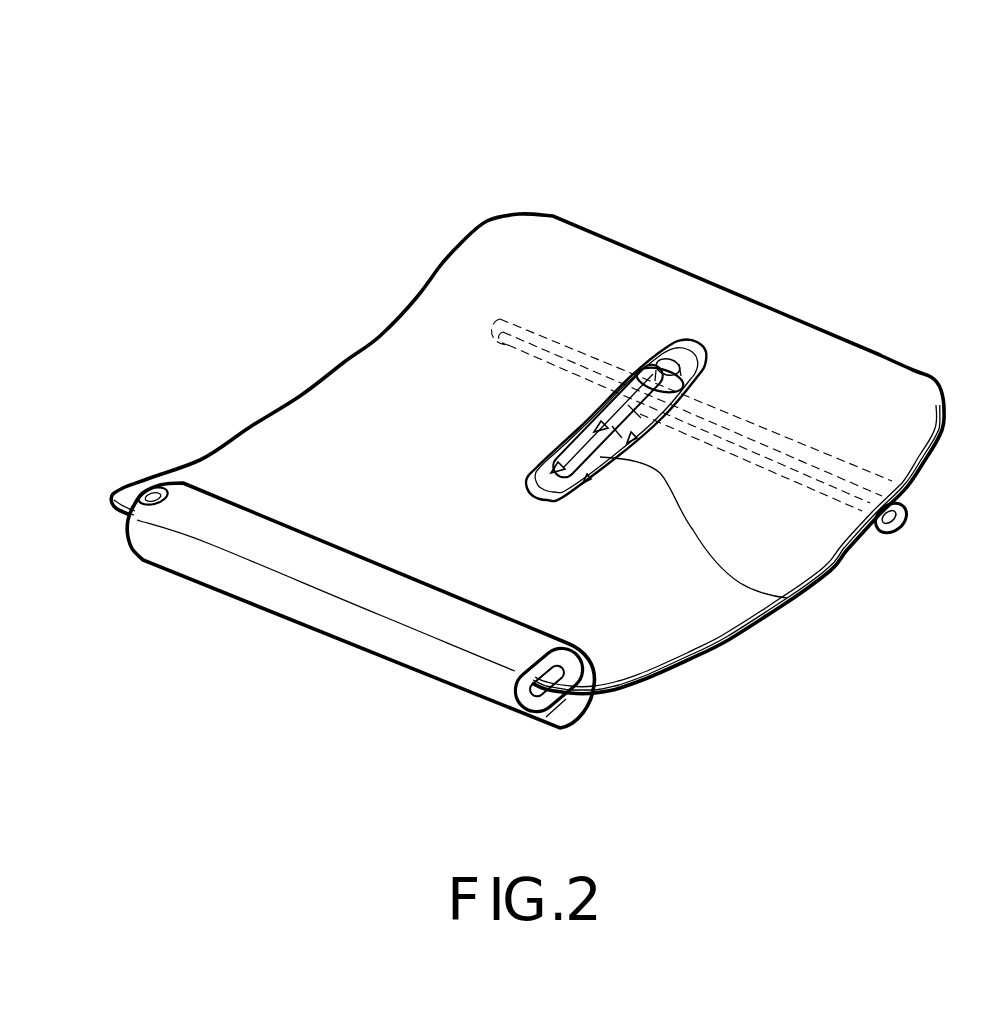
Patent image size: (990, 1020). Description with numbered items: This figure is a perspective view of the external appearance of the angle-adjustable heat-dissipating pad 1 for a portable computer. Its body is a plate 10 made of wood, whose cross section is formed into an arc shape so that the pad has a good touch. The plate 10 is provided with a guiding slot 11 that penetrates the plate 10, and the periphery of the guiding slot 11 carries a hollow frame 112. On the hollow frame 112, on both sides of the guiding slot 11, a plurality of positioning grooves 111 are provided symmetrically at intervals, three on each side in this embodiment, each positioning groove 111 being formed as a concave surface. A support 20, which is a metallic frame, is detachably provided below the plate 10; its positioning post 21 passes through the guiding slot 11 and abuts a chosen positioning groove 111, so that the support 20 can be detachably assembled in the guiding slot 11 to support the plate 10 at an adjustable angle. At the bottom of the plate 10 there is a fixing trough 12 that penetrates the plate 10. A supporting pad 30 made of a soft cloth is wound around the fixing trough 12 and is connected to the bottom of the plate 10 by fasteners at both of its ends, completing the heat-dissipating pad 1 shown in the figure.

The angle-adjustable heat-dissipating pad 1 is at (413, 70).
The plate 10 is at (545, 257).
The guiding slot 11 is at (787, 600).
The fixing trough 12 is at (600, 670).
The support 20 is at (802, 450).
The positioning post 21 is at (652, 358).
The supporting pad 30 is at (410, 655).
The positioning groove 111 is at (563, 427).
The hollow frame 112 is at (687, 353).